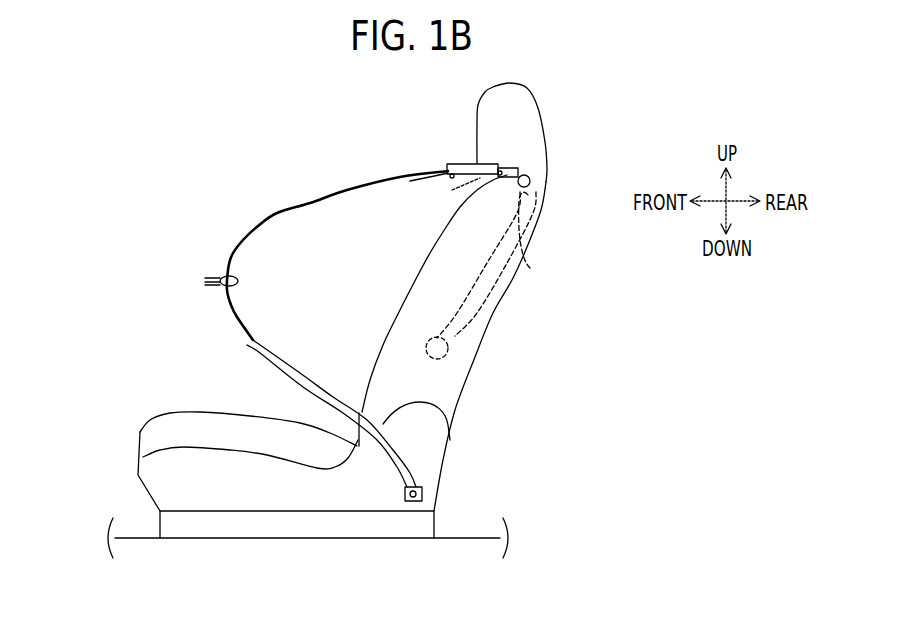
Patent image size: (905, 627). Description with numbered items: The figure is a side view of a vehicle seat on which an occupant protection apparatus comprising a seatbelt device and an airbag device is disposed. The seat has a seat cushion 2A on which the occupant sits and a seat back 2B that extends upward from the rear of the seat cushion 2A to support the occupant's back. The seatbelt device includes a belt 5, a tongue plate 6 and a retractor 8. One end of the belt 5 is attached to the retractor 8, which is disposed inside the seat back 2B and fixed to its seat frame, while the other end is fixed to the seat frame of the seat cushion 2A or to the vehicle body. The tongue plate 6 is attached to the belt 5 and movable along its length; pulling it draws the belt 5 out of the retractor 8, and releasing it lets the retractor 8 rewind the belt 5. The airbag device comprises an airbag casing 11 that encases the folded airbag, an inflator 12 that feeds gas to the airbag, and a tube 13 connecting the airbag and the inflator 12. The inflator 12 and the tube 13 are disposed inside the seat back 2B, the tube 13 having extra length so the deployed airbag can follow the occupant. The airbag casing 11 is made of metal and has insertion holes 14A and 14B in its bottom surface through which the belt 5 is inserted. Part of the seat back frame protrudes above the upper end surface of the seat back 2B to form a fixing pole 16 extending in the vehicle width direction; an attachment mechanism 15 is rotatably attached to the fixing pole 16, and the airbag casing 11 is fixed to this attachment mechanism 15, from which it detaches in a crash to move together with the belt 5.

The seat cushion 2A is at (190, 422).
The seat back 2B is at (450, 393).
The belt 5 is at (328, 191).
The tongue plate 6 is at (224, 273).
The retractor 8 is at (462, 351).
The airbag casing 11 is at (468, 162).
The inflator 12 is at (520, 268).
The tube 13 is at (550, 212).
The insertion hole 14A is at (450, 173).
The insertion hole 14B is at (452, 190).
The attachment mechanism 15 is at (524, 163).
The fixing pole 16 is at (532, 182).